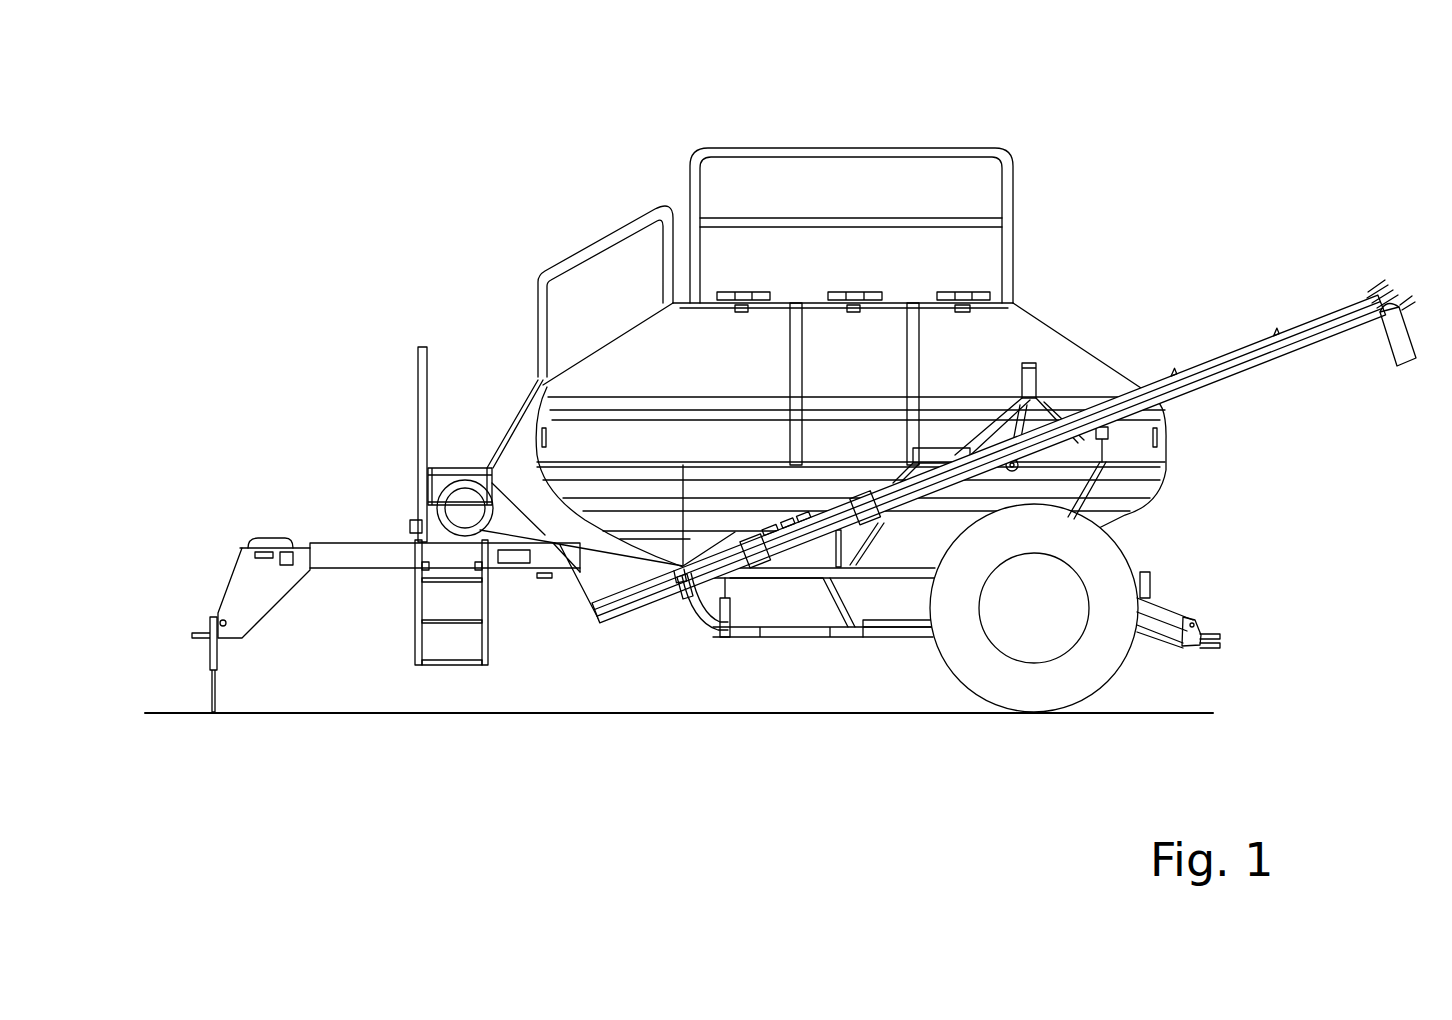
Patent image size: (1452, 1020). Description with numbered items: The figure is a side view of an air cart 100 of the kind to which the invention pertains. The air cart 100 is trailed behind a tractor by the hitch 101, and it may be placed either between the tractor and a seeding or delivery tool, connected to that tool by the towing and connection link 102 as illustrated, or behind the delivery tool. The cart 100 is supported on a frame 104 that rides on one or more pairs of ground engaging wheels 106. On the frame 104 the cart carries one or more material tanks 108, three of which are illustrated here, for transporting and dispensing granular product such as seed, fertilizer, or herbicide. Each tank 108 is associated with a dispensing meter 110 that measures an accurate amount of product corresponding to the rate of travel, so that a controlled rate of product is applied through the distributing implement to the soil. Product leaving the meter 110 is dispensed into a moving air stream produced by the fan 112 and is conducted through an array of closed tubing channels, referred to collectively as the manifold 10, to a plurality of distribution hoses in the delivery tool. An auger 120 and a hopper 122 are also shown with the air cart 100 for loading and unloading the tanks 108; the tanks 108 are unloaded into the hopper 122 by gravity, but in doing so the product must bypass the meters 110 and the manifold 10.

The manifold 10 is at (688, 640).
The air cart 100 is at (440, 305).
The hitch 101 is at (190, 633).
The towing and connection link 102 is at (1200, 630).
The frame 104 is at (355, 540).
The ground engaging wheels 106 is at (1110, 557).
The material tanks 108 is at (750, 381).
The dispensing meter 110 is at (843, 587).
The fan 112 is at (457, 512).
The auger 120 is at (1245, 350).
The hopper 122 is at (613, 577).